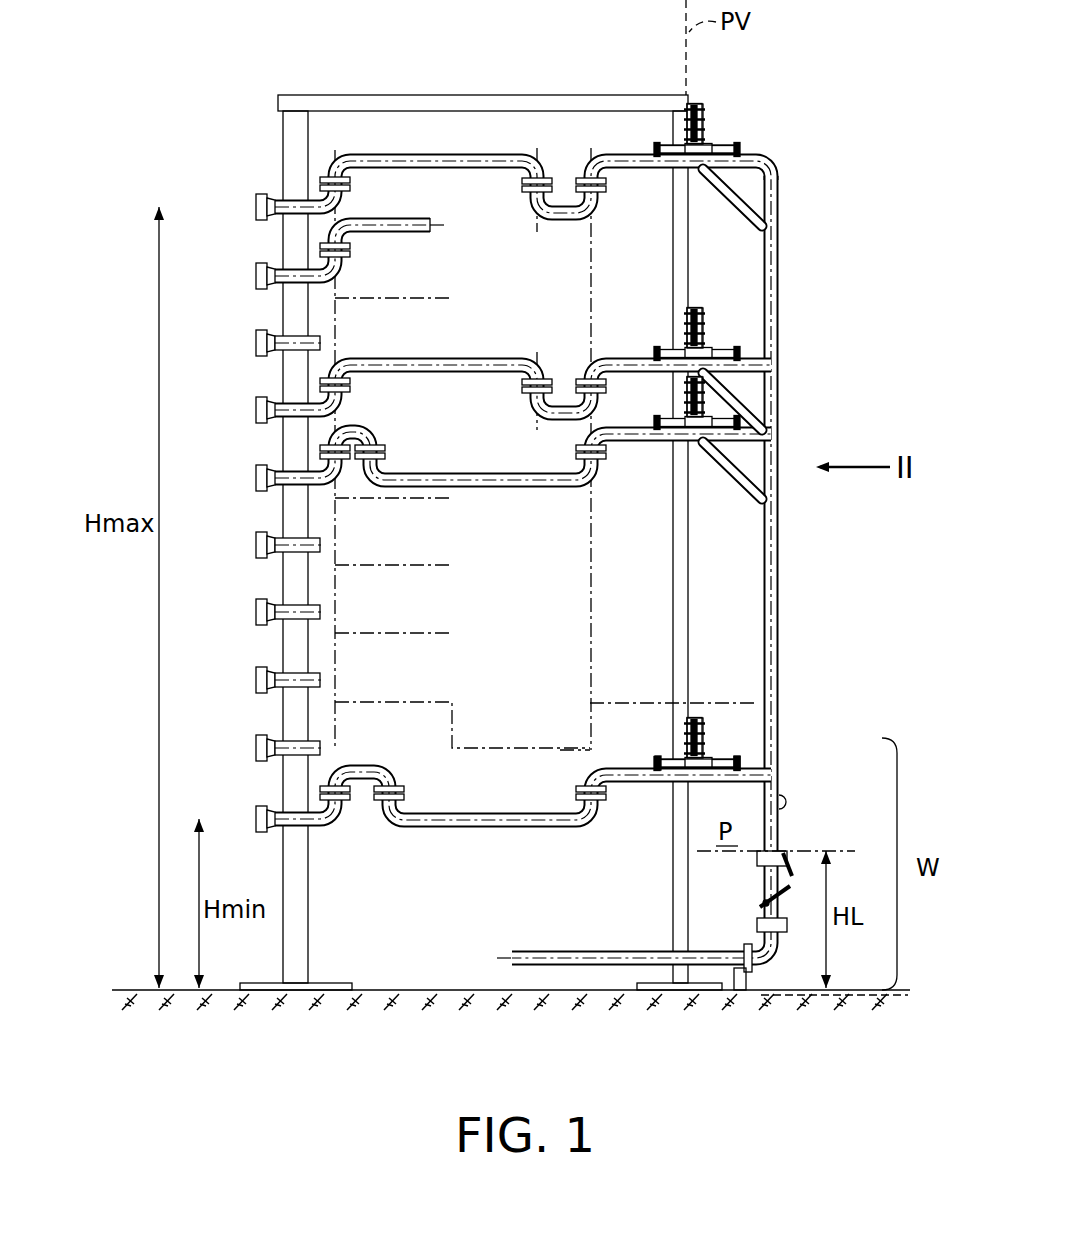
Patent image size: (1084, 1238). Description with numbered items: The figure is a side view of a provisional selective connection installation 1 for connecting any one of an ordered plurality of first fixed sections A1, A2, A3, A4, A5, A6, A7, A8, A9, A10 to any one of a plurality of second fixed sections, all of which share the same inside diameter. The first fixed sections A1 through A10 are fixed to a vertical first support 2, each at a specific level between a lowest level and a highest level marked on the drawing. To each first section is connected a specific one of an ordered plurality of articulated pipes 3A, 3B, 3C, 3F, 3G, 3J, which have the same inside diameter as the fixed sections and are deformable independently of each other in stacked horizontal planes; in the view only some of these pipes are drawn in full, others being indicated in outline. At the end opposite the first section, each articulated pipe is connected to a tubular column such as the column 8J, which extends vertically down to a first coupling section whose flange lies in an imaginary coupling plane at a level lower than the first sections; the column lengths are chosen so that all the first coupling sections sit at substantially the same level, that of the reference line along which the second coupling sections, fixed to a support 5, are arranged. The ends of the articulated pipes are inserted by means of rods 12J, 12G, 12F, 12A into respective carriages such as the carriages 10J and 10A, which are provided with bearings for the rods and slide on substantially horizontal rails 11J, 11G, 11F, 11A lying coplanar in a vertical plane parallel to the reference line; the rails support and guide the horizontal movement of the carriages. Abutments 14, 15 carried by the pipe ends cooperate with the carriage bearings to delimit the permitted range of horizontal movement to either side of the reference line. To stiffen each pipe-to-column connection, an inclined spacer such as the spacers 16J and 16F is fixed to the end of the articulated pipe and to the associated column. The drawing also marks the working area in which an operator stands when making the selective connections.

The provisional selective connection installation 1 is at (750, 66).
The vertical first support 2 is at (283, 141).
The articulated pipe 3A is at (449, 834).
The articulated pipe 3B is at (452, 720).
The articulated pipe 3C is at (428, 633).
The articulated pipe 3F is at (425, 472).
The articulated pipe 3G is at (425, 357).
The articulated pipe 3J is at (489, 174).
The support 5 is at (745, 990).
The tubular column 8J is at (781, 283).
The carriage 10J is at (735, 146).
The carriage 10A is at (712, 757).
The rail 11J is at (704, 118).
The rail 11G is at (700, 330).
The rail 11F is at (705, 379).
The rail 11A is at (704, 734).
The rod 12J is at (665, 146).
The rod 12G is at (665, 350).
The rod 12F is at (728, 408).
The rod 12A is at (665, 758).
The abutment 14 is at (658, 760).
The abutment 15 is at (742, 761).
The inclined spacer 16J is at (757, 224).
The inclined spacer 16F is at (758, 495).
The first fixed section A1 is at (180, 819).
The first fixed section A2 is at (180, 748).
The first fixed section A3 is at (180, 680).
The first fixed section A4 is at (180, 612).
The first fixed section A5 is at (180, 545).
The first fixed section A6 is at (180, 478).
The first fixed section A7 is at (180, 410).
The first fixed section A8 is at (180, 343).
The first fixed section A9 is at (180, 276).
The first fixed section A10 is at (150, 207).